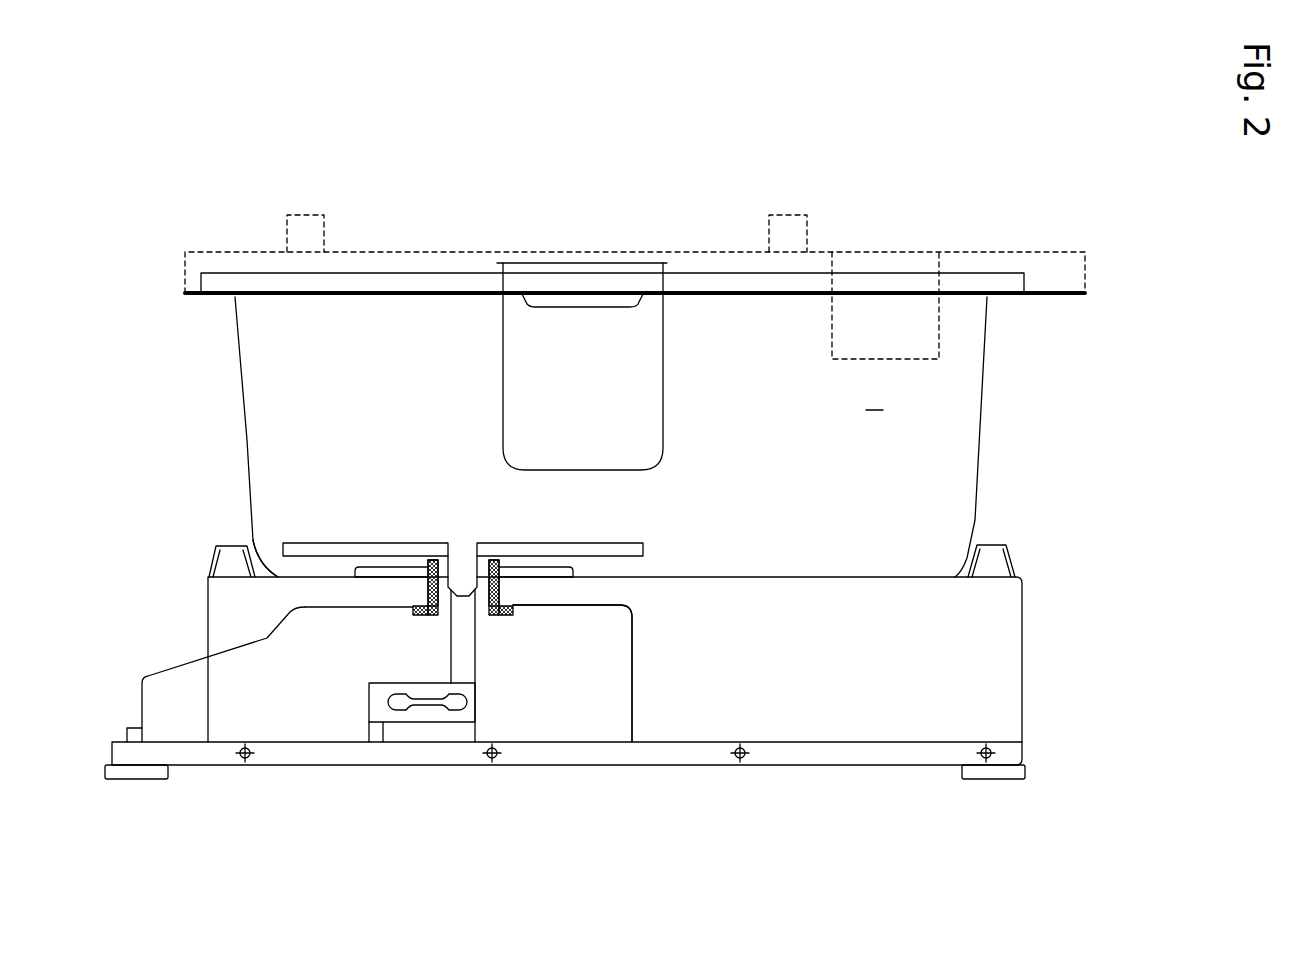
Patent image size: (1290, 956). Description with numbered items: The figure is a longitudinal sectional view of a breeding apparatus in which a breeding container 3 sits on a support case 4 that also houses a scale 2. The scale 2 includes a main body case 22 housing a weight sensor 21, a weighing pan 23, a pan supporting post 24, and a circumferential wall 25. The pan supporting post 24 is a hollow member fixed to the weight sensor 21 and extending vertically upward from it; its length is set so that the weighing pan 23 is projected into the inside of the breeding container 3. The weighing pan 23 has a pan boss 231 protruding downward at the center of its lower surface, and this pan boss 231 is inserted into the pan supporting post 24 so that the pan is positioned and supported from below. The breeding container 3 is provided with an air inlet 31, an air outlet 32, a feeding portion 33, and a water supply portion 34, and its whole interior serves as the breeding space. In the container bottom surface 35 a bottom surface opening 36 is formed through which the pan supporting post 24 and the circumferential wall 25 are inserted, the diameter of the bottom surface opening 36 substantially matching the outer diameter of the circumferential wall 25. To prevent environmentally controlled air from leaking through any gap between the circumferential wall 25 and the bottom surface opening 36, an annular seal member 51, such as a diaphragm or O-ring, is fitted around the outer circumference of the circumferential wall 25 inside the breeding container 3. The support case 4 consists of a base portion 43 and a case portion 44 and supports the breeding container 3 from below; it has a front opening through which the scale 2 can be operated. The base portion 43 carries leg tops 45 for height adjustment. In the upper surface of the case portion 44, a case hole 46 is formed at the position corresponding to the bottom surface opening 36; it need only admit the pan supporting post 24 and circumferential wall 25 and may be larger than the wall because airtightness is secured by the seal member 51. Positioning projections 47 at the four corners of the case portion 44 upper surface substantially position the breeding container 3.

The scale 2 is at (138, 693).
The breeding container 3 is at (238, 372).
The support case 4 is at (1025, 622).
The weight sensor 21 is at (415, 717).
The main body case 22 is at (165, 668).
The weighing pan 23 is at (368, 548).
The pan boss 231 is at (463, 570).
The pan supporting post 24 is at (467, 650).
The circumferential wall 25 is at (422, 610).
The air inlet 31 is at (787, 215).
The air outlet 32 is at (305, 215).
The feeding portion 33 is at (567, 263).
The water supply portion 34 is at (949, 262).
The container bottom surface 35 is at (272, 575).
The bottom surface opening 36 is at (428, 565).
The base portion 43 is at (680, 752).
The case portion 44 is at (995, 665).
The leg tops 45 is at (143, 773).
The case hole 46 is at (427, 590).
The positioning projections 47 is at (230, 563).
The seal member 51 is at (355, 568).